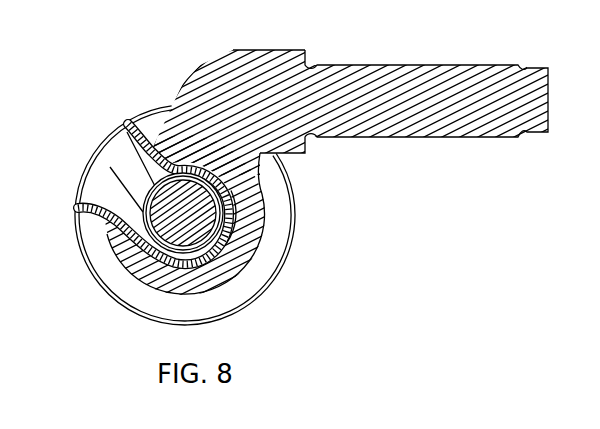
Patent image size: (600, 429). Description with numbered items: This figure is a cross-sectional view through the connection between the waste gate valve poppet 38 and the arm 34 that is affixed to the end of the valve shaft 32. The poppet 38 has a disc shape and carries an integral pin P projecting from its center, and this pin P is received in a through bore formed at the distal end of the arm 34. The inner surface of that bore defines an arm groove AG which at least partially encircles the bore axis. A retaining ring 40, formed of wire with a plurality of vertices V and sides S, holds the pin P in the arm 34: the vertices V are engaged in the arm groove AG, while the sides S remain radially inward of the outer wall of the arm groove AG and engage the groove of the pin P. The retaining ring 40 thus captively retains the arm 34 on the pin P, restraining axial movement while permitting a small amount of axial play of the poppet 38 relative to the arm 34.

The valve shaft 32 is at (412, 128).
The arm 34 is at (224, 270).
The poppet 38 is at (267, 258).
The retaining ring 40 is at (107, 220).
The pin P is at (187, 212).
The sides S is at (204, 172).
The vertices V is at (263, 153).
The arm groove AG is at (228, 180).